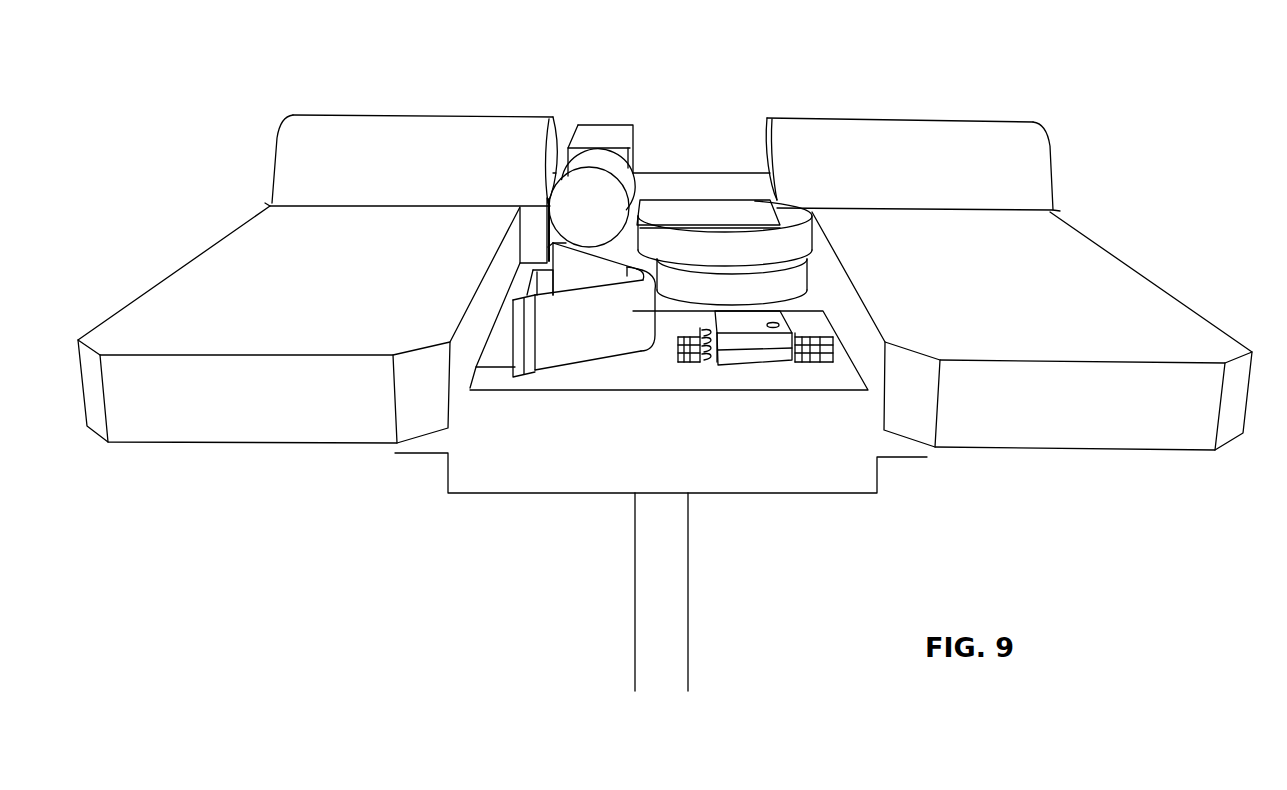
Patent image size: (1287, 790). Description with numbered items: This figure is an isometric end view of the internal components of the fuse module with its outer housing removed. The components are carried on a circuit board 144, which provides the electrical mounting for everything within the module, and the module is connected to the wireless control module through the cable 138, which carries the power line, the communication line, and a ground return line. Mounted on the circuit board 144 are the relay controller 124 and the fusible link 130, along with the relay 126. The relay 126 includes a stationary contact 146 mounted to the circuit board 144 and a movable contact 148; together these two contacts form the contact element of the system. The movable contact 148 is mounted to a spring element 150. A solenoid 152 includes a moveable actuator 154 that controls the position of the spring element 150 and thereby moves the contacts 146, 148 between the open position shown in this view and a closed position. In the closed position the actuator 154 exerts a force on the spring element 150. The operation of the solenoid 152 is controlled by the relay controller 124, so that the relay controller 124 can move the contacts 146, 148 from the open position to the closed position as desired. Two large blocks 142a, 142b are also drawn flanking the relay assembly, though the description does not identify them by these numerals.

The relay controller 124 is at (760, 340).
The relay 126 is at (785, 204).
The fusible link 130 is at (603, 338).
The cable 138 is at (667, 597).
The right block 142a is at (1090, 278).
The left block 142b is at (192, 302).
The circuit board 144 is at (825, 475).
The stationary contact 146 is at (800, 293).
The movable contact 148 is at (800, 243).
The spring element 150 is at (703, 212).
The solenoid 152 is at (610, 138).
The moveable actuator 154 is at (572, 205).